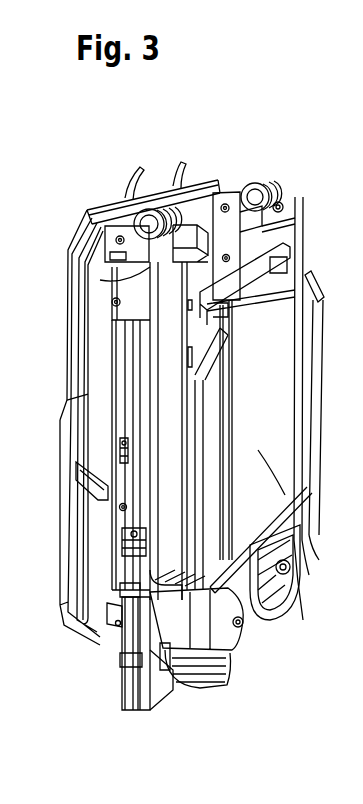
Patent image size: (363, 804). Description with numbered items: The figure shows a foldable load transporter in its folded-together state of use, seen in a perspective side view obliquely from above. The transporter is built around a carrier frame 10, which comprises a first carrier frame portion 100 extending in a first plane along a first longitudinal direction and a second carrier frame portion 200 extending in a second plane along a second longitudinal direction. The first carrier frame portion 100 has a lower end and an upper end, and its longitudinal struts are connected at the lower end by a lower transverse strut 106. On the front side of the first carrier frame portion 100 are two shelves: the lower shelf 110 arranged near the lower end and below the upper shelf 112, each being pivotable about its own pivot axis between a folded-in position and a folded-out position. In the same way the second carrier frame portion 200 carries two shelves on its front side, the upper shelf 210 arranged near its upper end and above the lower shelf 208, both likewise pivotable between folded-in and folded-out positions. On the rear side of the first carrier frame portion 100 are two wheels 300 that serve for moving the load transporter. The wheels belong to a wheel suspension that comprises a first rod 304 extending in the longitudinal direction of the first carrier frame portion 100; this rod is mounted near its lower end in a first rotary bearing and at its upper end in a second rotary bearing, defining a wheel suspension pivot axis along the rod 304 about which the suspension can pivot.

The carrier frame 10 is at (283, 251).
The first carrier frame portion 100 is at (120, 372).
The lower transverse strut 106 is at (163, 688).
The lower shelf 110 is at (70, 592).
The upper shelf 112 is at (82, 225).
The second carrier frame portion 200 is at (306, 222).
The lower shelf 208 is at (293, 588).
The upper shelf 210 is at (168, 303).
The wheels 300 is at (195, 688).
The first rod 304 is at (138, 536).